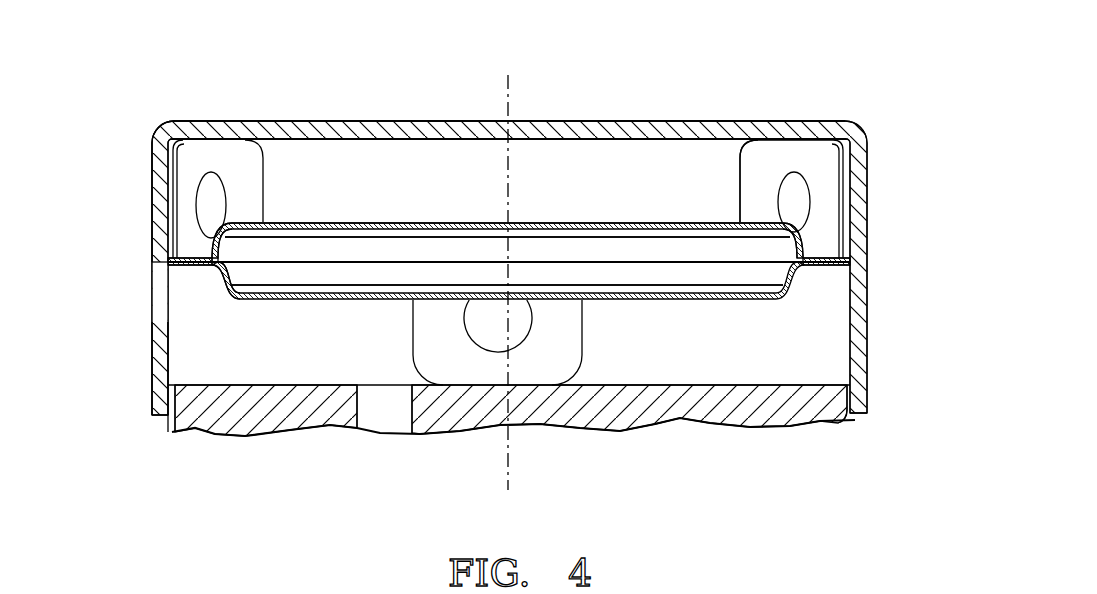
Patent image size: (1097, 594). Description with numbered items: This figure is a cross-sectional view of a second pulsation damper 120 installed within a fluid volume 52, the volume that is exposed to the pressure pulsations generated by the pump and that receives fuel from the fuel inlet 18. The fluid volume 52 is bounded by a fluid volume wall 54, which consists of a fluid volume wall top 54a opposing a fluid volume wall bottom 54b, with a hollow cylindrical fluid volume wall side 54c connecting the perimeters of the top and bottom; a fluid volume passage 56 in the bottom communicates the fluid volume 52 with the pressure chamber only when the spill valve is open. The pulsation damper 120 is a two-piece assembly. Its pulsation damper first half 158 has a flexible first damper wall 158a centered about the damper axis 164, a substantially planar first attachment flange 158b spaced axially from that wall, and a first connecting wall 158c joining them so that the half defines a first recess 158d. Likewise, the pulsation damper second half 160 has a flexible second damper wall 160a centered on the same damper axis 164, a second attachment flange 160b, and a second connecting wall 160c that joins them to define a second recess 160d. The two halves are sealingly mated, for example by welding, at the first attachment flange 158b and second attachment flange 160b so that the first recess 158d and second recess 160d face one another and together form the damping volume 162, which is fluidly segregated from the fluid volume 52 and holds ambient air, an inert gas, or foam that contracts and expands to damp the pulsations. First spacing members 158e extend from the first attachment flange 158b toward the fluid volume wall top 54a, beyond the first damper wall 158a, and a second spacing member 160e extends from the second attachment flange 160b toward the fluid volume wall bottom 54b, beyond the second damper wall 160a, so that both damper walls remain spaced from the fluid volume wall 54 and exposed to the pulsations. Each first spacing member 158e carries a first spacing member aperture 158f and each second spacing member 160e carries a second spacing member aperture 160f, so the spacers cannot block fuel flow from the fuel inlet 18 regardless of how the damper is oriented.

The fuel inlet 18 is at (158, 322).
The fluid volume 52 is at (740, 353).
The fluid volume wall 54 is at (870, 130).
The fluid volume wall top 54a is at (550, 120).
The fluid volume wall bottom 54b is at (672, 414).
The fluid volume wall side 54c is at (153, 153).
The fluid volume passage 56 is at (372, 428).
The pulsation damper 120 is at (707, 188).
The pulsation damper first half 158 is at (670, 218).
The first damper wall 158a is at (444, 222).
The first attachment flange 158b is at (207, 257).
The first connecting wall 158c is at (263, 220).
The first recess 158d is at (750, 250).
The first spacing members 158e is at (232, 152).
The first spacing member aperture 158f is at (207, 197).
The pulsation damper second half 160 is at (693, 310).
The second damper wall 160a is at (275, 300).
The second attachment flange 160b is at (190, 264).
The second connecting wall 160c is at (212, 268).
The second recess 160d is at (778, 270).
The second spacing member 160e is at (470, 372).
The second spacing member aperture 160f is at (523, 320).
The damping volume 162 is at (509, 261).
The damper axis 164 is at (512, 442).